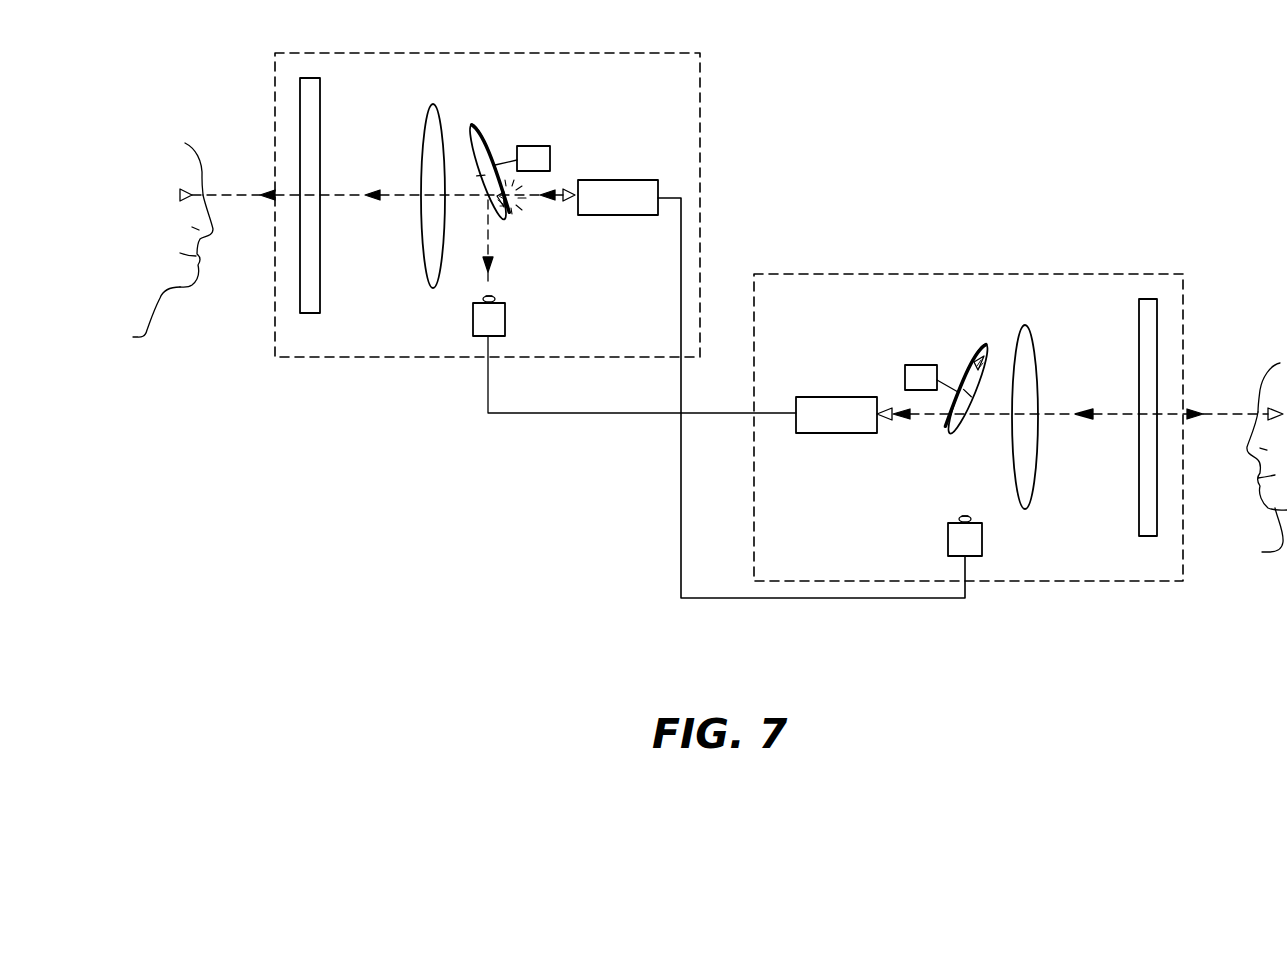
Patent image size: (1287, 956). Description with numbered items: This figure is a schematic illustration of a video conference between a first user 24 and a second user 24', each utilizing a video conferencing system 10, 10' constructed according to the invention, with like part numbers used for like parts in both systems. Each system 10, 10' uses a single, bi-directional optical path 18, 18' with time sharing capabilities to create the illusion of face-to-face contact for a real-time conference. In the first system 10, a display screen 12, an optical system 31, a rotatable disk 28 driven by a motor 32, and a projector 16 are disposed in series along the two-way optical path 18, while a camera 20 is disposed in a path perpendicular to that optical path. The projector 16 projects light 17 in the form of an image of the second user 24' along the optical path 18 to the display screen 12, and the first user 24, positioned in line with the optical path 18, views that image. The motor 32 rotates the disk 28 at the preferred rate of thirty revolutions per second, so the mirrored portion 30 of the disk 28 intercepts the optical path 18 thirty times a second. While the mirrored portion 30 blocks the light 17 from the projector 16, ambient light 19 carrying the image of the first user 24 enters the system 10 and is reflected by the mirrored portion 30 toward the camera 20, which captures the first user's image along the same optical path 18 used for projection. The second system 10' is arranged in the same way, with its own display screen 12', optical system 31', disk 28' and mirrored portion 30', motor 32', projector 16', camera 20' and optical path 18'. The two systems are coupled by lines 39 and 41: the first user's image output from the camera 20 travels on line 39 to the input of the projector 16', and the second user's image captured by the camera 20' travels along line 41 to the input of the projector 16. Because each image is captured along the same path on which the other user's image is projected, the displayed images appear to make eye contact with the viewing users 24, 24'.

The video conferencing system 10 is at (544, 205).
The video conferencing system 10' is at (968, 391).
The display screen 12 is at (342, 194).
The display screen 12' is at (1115, 417).
The projector 16 is at (612, 177).
The projector 16' is at (840, 393).
The light 17 is at (545, 204).
The two-way optical path 18 is at (366, 219).
The two-way optical path 18' is at (1089, 393).
The ambient light 19 is at (370, 192).
The camera 20 is at (460, 270).
The camera 20' is at (999, 541).
The first user 24 is at (158, 247).
The second user 24' is at (1252, 467).
The rotatable disk 28 is at (498, 162).
The rotatable disk 28' is at (952, 376).
The mirrored portion 30 is at (489, 218).
The mirrored portion 30' is at (1007, 327).
The optical system 31 is at (460, 178).
The optical system 31' is at (1056, 393).
The motor 32 is at (561, 148).
The motor 32' is at (903, 366).
The line 39 is at (568, 413).
The line 41 is at (820, 598).